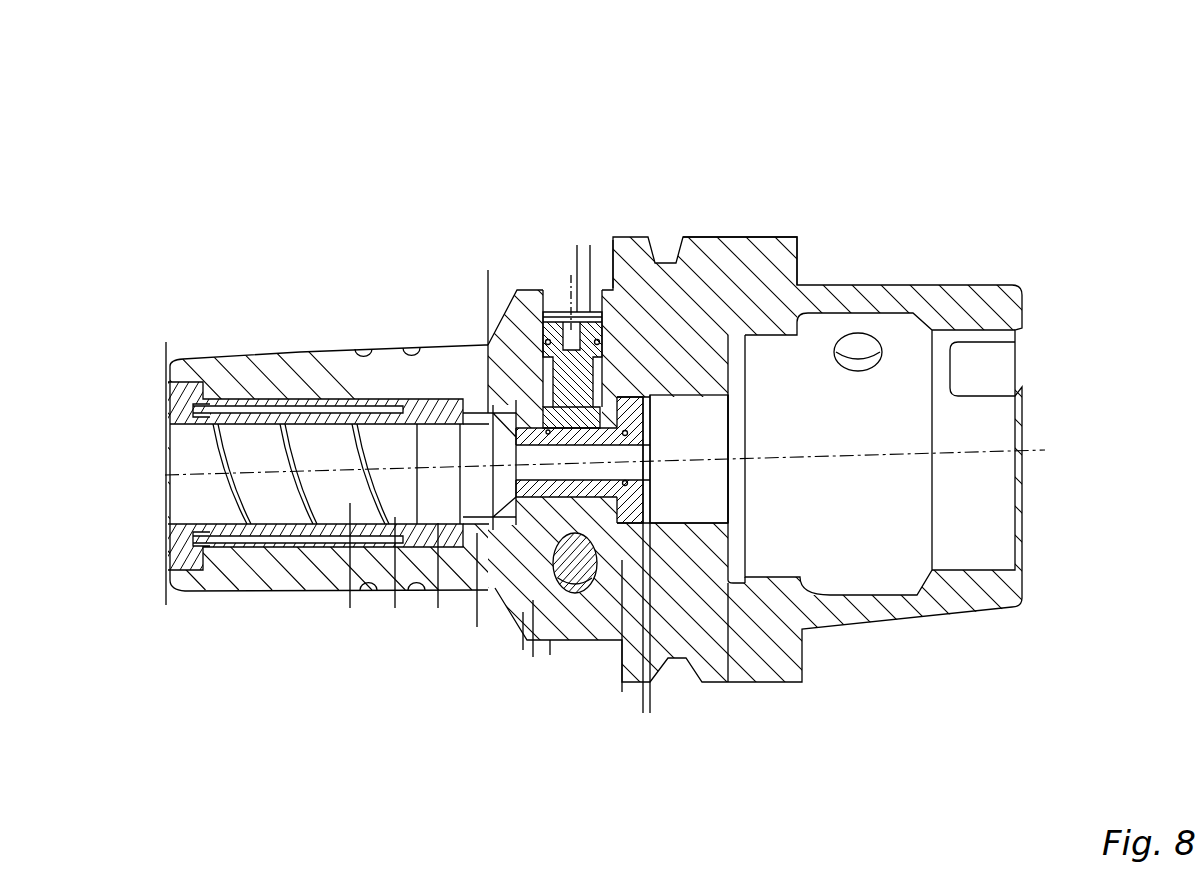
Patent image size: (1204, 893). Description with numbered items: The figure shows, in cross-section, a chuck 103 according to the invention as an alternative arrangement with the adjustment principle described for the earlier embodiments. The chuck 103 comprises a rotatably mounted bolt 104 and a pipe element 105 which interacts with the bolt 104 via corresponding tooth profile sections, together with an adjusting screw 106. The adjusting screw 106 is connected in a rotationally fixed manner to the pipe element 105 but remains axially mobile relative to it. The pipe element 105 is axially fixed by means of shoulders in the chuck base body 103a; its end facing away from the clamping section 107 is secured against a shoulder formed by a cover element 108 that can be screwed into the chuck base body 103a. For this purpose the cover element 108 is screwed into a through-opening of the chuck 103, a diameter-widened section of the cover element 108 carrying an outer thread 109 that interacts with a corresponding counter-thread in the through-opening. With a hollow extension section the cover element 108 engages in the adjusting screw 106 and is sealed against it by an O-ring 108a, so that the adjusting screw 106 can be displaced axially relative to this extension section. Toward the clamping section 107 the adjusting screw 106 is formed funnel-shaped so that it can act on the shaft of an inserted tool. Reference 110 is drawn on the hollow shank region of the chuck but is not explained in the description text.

The chuck 103 is at (499, 252).
The chuck base body 103a is at (775, 306).
The bolt 104 is at (603, 359).
The pipe element 105 is at (594, 508).
The adjusting screw 106 is at (534, 424).
The clamping section 107 is at (341, 358).
The cover element 108 is at (644, 418).
The O-ring 108a is at (644, 470).
The outer thread 109 is at (620, 396).
The hollow shank cavity 110 is at (728, 405).